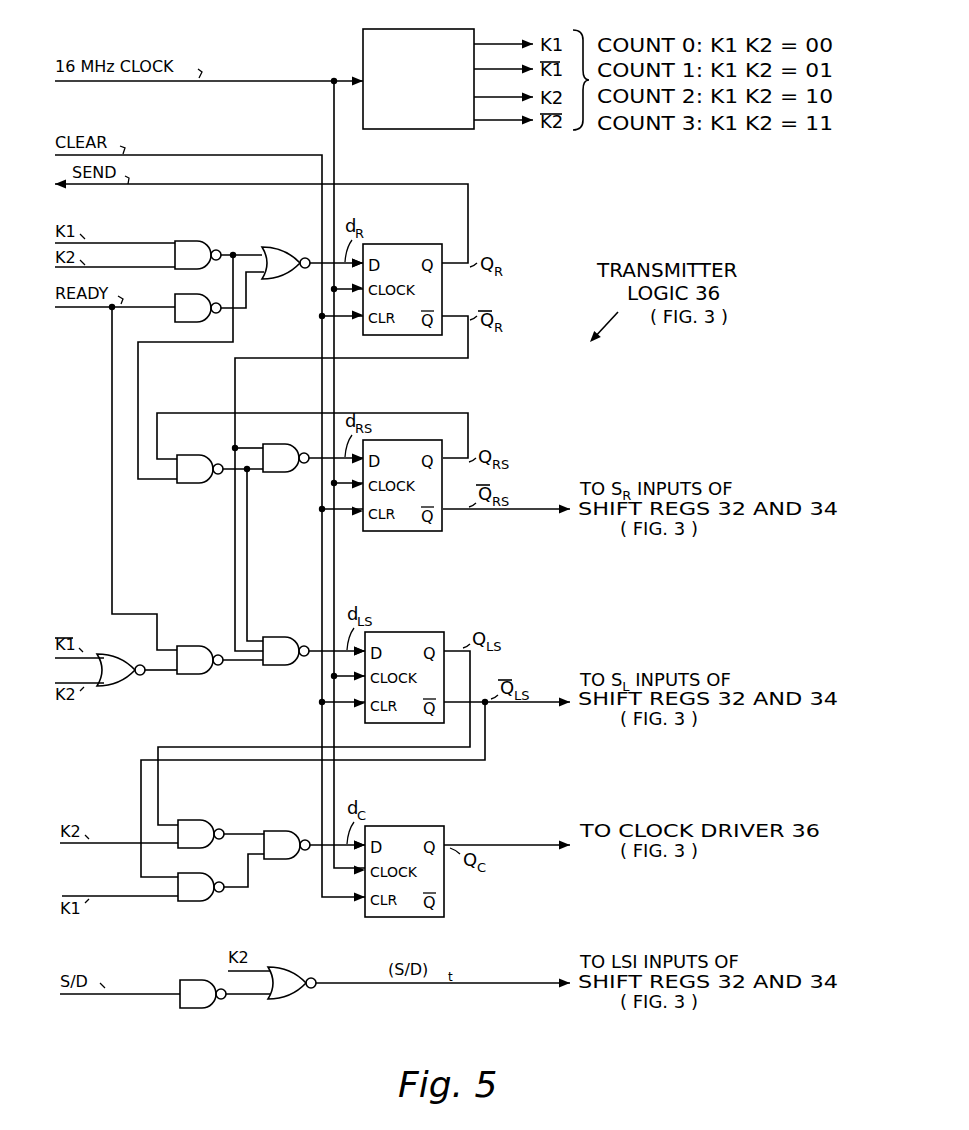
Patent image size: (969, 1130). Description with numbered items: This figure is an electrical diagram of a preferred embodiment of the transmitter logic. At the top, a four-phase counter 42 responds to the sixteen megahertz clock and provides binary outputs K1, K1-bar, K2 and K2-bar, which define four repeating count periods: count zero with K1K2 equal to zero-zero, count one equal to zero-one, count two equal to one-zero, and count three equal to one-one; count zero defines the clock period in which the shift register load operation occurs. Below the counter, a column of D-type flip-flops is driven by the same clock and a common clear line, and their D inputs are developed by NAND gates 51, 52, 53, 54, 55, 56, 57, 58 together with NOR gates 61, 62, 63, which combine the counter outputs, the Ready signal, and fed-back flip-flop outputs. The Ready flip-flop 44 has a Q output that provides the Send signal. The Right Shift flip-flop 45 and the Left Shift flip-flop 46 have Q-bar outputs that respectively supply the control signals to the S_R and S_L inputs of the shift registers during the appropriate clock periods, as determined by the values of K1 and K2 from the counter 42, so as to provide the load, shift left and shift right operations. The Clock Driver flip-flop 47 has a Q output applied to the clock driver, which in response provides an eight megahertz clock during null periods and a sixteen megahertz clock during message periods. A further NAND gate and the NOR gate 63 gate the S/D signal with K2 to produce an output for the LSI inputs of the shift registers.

The four-phase counter 42 is at (456, 31).
The Ready flip-flop 44 is at (412, 236).
The Right Shift flip-flop 45 is at (405, 438).
The Left Shift flip-flop 46 is at (410, 631).
The Clock Driver flip-flop 47 is at (425, 808).
The NAND gate 51 is at (187, 241).
The NAND gate 52 is at (188, 294).
The NAND gate 53 is at (182, 455).
The NAND gate 54 is at (274, 444).
The NAND gate 55 is at (186, 646).
The NAND gate 56 is at (273, 637).
The NAND gate 57 is at (190, 820).
The NAND gate 58 is at (202, 874).
The NOR gate 61 is at (262, 247).
The NOR gate 62 is at (103, 655).
The NOR gate 63 is at (279, 968).